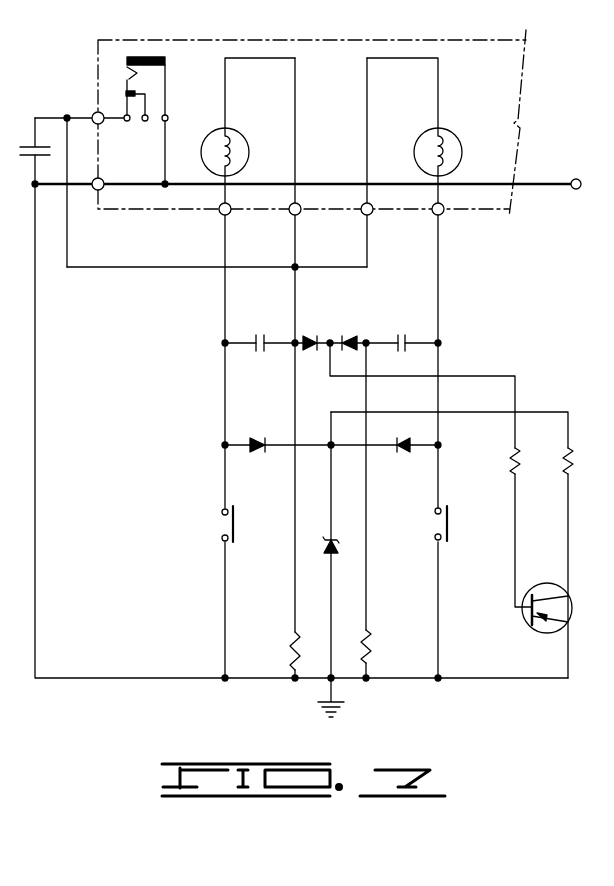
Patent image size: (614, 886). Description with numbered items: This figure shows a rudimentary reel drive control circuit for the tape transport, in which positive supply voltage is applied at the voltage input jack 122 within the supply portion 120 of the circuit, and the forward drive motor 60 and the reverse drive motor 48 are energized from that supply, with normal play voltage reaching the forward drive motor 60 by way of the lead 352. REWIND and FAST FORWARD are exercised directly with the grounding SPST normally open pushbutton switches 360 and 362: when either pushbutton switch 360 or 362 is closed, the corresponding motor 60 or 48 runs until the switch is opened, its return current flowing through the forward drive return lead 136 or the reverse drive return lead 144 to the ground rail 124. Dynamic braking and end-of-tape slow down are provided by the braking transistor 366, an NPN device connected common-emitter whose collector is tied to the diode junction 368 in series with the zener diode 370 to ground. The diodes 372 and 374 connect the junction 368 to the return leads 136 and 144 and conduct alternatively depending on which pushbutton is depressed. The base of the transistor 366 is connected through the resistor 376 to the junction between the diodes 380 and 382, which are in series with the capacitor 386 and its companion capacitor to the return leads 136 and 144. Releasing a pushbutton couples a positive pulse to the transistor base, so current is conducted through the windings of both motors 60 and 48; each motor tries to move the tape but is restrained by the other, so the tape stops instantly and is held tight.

The control circuit enclosure 120 is at (322, 32).
The voltage input jack 122 is at (167, 81).
The forward drive motor 60 is at (245, 142).
The reverse drive motor 48 is at (459, 143).
The reverse drive return lead 144 is at (438, 253).
The lead 352 is at (106, 276).
The forward drive return lead 136 is at (222, 304).
The diode 380 is at (269, 332).
The diode 372 is at (332, 338).
The diode 382 is at (349, 335).
The capacitor 386 is at (256, 349).
The ground conductor 124 is at (36, 424).
The diode 374 is at (255, 452).
The diode junction 368 is at (332, 452).
The zener diode 370 is at (331, 535).
The pushbutton switch 360 is at (235, 524).
The pushbutton switch 362 is at (449, 524).
The resistor 376 is at (517, 470).
The braking transistor 366 is at (560, 573).